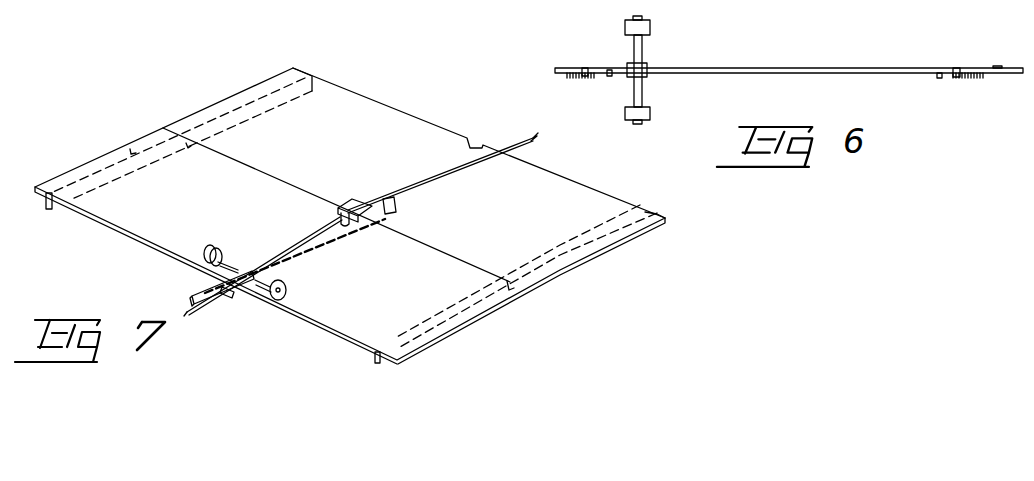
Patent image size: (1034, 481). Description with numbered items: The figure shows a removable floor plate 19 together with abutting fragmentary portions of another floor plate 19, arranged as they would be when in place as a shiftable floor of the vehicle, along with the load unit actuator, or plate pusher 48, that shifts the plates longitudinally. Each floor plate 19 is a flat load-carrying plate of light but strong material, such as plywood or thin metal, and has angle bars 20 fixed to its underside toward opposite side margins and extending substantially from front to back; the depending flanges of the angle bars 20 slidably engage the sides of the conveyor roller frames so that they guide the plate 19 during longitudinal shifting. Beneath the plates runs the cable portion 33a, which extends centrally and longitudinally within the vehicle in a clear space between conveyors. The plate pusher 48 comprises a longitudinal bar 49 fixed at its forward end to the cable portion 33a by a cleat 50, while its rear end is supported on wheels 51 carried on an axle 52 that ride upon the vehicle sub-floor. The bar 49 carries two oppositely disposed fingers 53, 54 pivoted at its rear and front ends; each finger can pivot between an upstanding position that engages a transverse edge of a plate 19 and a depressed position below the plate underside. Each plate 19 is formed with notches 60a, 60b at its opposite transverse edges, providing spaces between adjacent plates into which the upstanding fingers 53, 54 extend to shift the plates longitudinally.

In FIG. 7, the floor plate 19 is at (350, 214).
In FIG. 7, the angle bar 20 is at (253, 100).
In FIG. 7, the cable portion 33a is at (190, 318).
In FIG. 6, the cable portion 33a is at (1017, 68).
In FIG. 7, the plate pusher 48 is at (303, 232).
In FIG. 6, the plate pusher 48 is at (865, 70).
In FIG. 6, the longitudinal bar 49 is at (762, 68).
In FIG. 7, the cleat 50 is at (397, 211).
In FIG. 6, the cleat 50 is at (995, 74).
In FIG. 7, the wheels 51 is at (205, 249).
In FIG. 6, the wheels 51 is at (651, 28).
In FIG. 6, the axle 52 is at (643, 51).
In FIG. 7, the finger 53 is at (229, 293).
In FIG. 7, the finger 54 is at (337, 213).
In FIG. 7, the notch 60a is at (210, 292).
In FIG. 7, the notch 60b is at (344, 206).